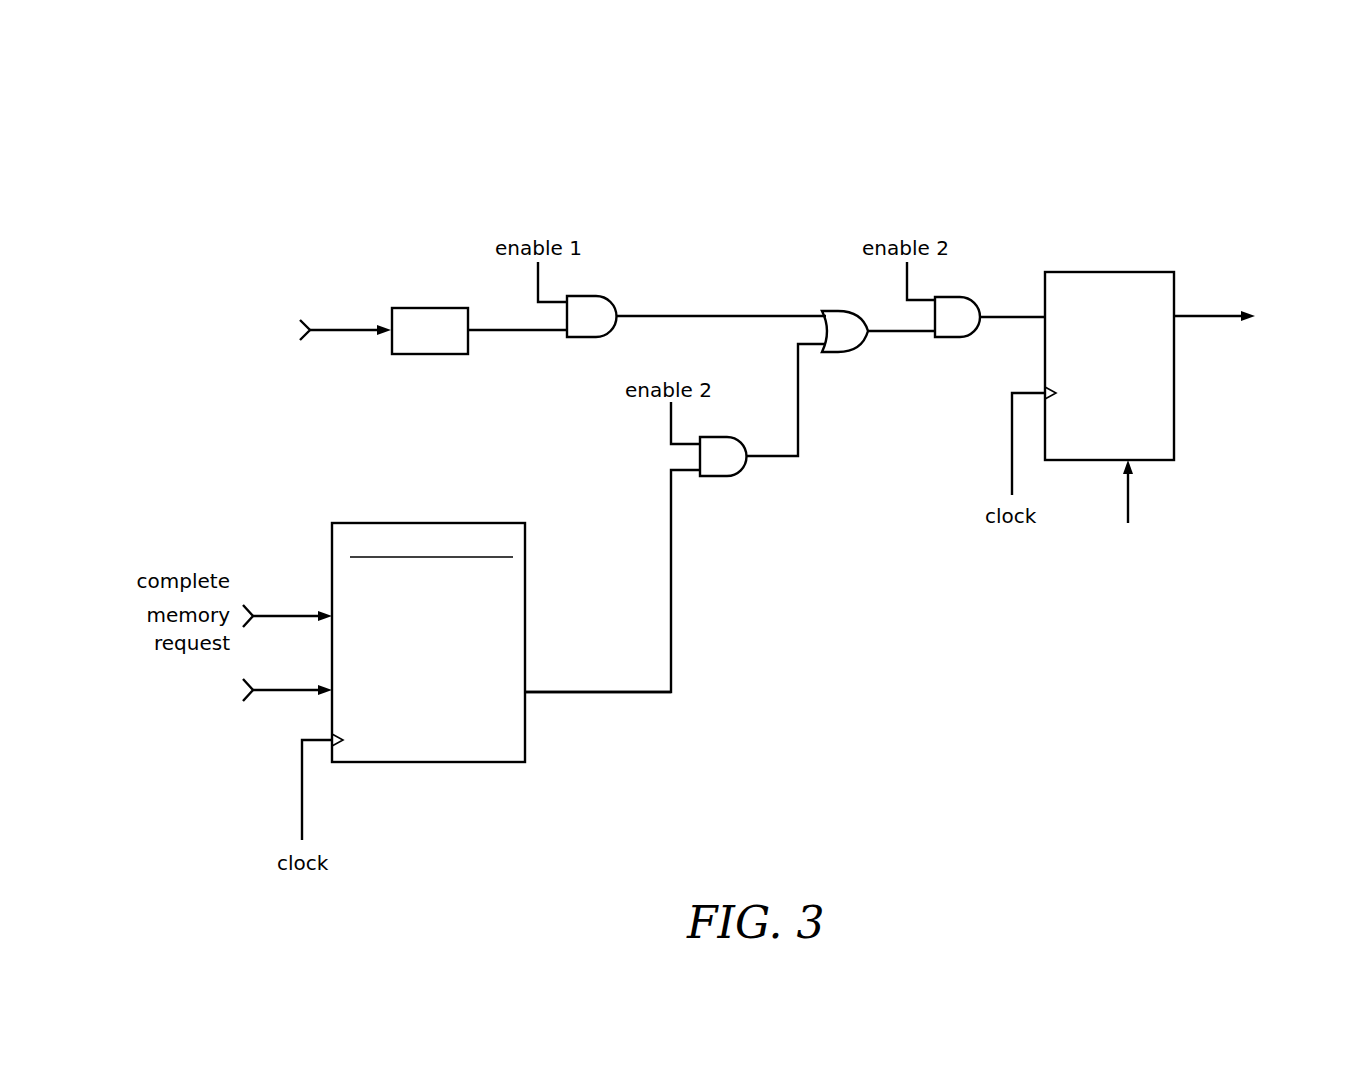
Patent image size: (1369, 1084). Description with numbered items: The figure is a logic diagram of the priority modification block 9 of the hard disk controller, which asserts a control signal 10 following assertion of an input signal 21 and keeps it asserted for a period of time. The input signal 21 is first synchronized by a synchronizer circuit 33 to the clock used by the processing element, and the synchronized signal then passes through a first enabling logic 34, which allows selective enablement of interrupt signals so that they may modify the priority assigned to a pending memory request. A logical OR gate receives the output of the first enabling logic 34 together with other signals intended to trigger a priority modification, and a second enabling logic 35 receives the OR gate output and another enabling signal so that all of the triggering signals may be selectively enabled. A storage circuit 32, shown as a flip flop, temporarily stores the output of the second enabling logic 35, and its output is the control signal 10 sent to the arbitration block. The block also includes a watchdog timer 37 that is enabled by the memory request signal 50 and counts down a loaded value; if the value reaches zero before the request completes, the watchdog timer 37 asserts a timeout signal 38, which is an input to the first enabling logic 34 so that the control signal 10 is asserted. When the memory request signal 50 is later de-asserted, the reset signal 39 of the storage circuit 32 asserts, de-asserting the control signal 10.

The priority modification block 9 is at (282, 174).
The input signal 21 is at (337, 327).
The synchronizer circuit 33 is at (430, 307).
The first enabling logic 34 is at (616, 327).
The second enabling logic 35 is at (945, 339).
The storage circuit 32 is at (1118, 271).
The control signal 10 is at (1193, 312).
The reset signal 39 is at (1130, 498).
The watchdog timer 37 is at (428, 521).
The timeout signal 38 is at (603, 695).
The memory request signal 50 is at (277, 697).